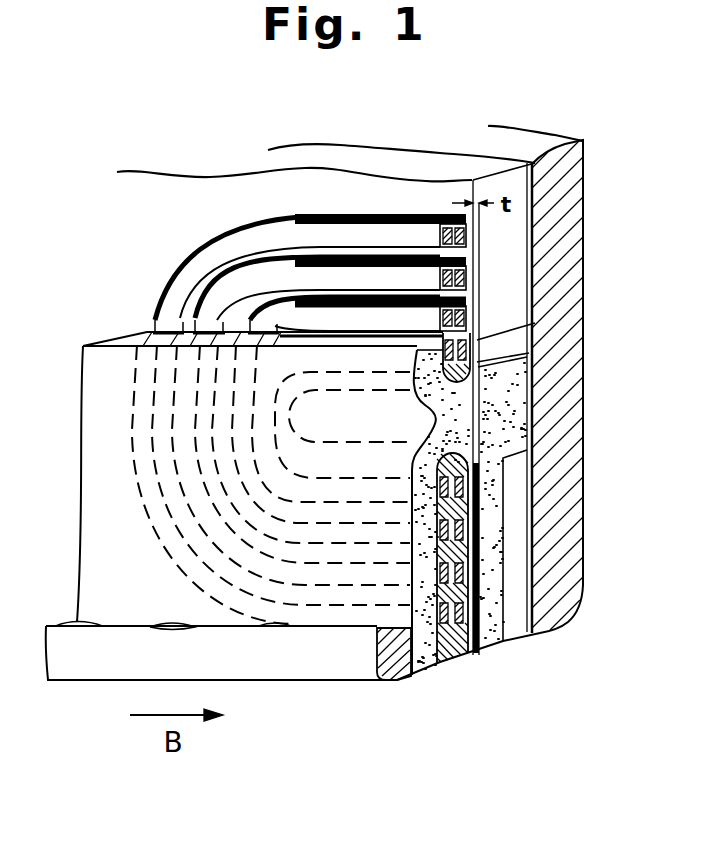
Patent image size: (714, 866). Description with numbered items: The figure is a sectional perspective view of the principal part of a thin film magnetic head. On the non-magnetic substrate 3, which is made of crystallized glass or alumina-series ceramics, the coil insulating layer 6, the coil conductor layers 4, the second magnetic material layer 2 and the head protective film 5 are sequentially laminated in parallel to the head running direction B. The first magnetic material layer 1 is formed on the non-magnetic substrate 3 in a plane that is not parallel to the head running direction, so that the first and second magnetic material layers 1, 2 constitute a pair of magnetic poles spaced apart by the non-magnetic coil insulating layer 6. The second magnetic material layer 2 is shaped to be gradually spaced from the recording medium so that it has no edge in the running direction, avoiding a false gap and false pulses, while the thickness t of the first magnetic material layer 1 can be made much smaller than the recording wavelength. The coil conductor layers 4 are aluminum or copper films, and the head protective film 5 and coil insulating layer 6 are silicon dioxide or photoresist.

The first magnetic material layer 1 is at (497, 640).
The second magnetic material layer 2 is at (422, 672).
The non-magnetic substrate 3 is at (513, 615).
The coil conductor layers 4 is at (535, 334).
The head protective film 5 is at (350, 668).
The coil insulating layer 6 is at (445, 652).